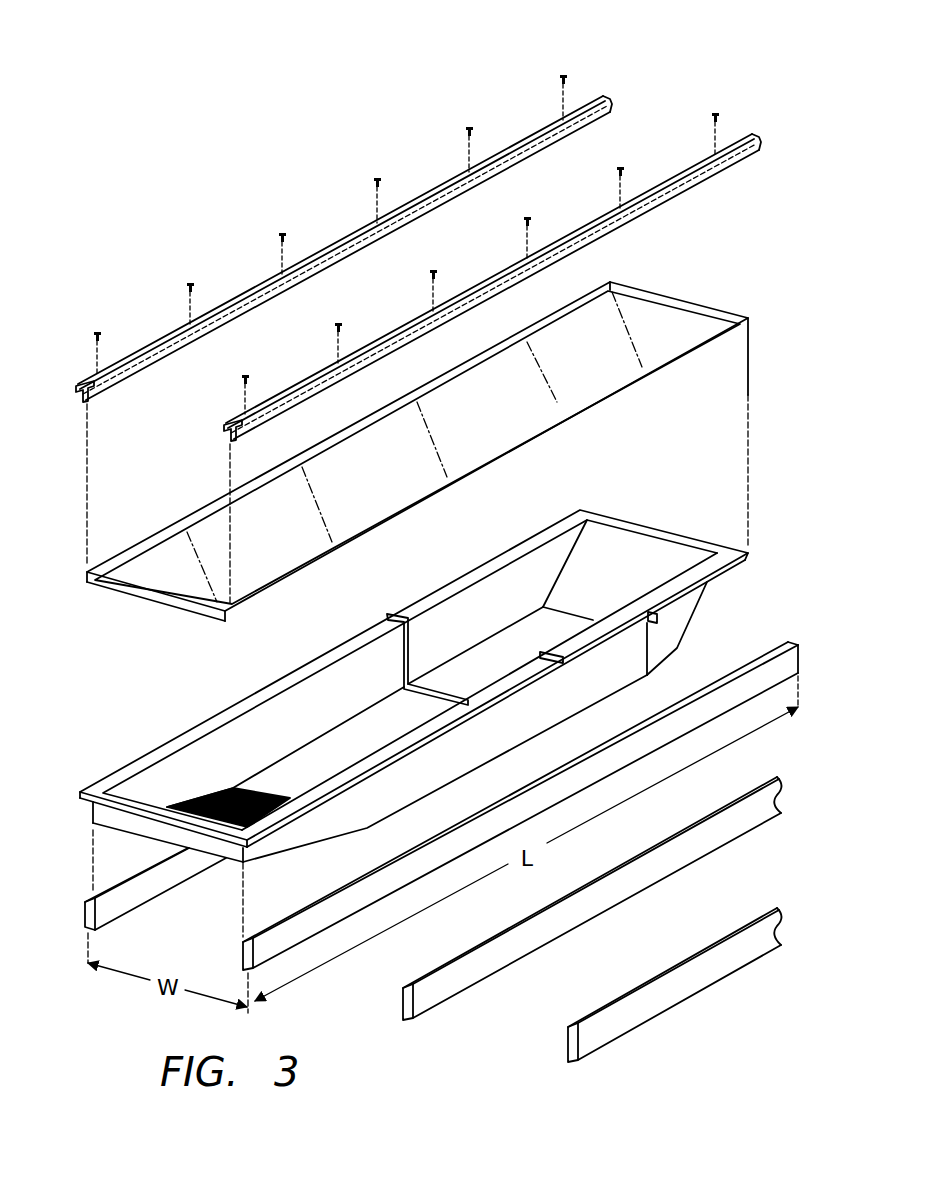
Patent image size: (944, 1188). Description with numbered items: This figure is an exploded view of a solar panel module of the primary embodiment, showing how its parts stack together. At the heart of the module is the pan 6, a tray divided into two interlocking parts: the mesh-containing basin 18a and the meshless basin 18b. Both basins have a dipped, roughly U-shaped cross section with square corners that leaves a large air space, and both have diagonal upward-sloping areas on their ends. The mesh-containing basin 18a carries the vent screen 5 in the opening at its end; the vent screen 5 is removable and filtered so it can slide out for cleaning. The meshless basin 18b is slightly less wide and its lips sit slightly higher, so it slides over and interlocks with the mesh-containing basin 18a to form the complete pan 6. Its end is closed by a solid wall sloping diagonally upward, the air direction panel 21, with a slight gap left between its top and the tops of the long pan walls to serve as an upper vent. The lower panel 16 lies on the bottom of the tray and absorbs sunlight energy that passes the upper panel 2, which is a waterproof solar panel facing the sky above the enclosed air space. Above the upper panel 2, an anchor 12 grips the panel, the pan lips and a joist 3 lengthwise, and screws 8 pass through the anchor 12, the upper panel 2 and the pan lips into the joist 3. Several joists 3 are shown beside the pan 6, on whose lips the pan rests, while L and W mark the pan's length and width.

The upper panel 2 is at (167, 540).
The joist 3 is at (140, 898).
The vent screen 5 is at (200, 795).
The pan 6 is at (414, 742).
The screw 8 is at (93, 333).
The anchor 12 is at (147, 347).
The lower panel 16 is at (293, 768).
The mesh-containing basin 18a is at (235, 735).
The meshless basin 18b is at (480, 597).
The air direction panel 21 is at (613, 552).